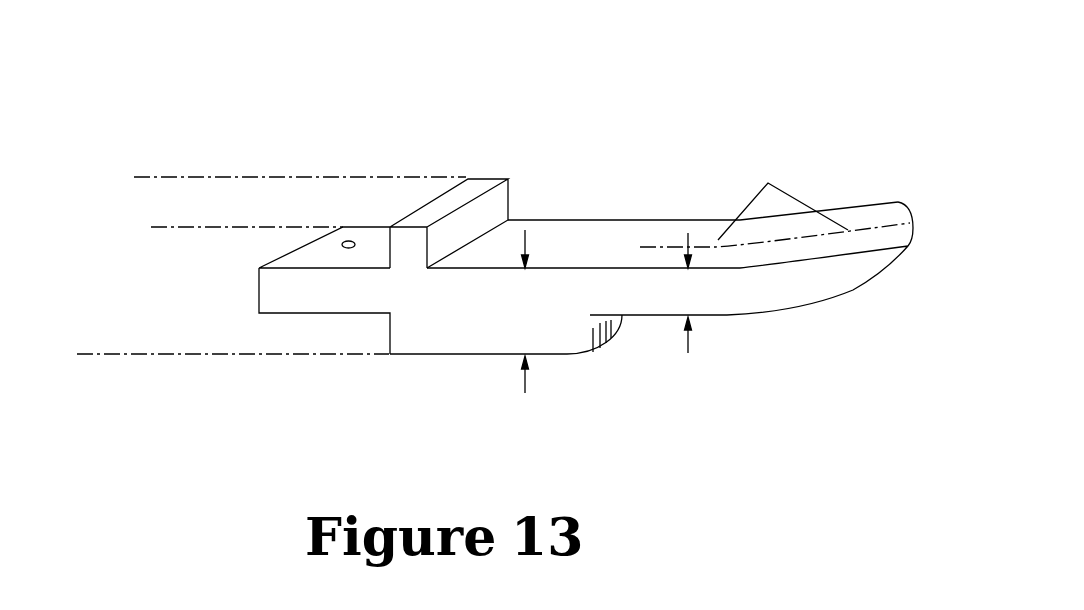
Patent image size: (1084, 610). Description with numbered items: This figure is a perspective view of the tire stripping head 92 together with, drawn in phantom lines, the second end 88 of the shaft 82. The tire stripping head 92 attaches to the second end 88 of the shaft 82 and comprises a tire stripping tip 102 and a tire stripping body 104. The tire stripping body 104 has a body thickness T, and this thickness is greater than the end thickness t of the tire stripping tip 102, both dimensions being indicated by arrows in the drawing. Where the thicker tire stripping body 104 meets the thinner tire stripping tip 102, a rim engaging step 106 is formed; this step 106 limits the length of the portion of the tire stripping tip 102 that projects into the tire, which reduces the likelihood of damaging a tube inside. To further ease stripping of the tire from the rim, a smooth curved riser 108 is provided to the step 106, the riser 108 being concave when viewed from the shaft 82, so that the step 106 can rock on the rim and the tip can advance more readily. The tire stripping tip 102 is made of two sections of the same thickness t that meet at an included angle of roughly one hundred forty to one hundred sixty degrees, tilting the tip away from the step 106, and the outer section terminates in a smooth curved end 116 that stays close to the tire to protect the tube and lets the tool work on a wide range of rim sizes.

The shaft 82 is at (112, 388).
The second end of the shaft 88 is at (303, 355).
The tire stripping head 92 is at (712, 125).
The tire stripping tip 102 is at (722, 203).
The tire stripping body 104 is at (472, 372).
The rim engaging step 106 is at (615, 375).
The smooth curved riser 108 is at (607, 341).
The smooth curved end 116 is at (899, 201).
The body thickness T is at (524, 328).
The end thickness t is at (691, 310).